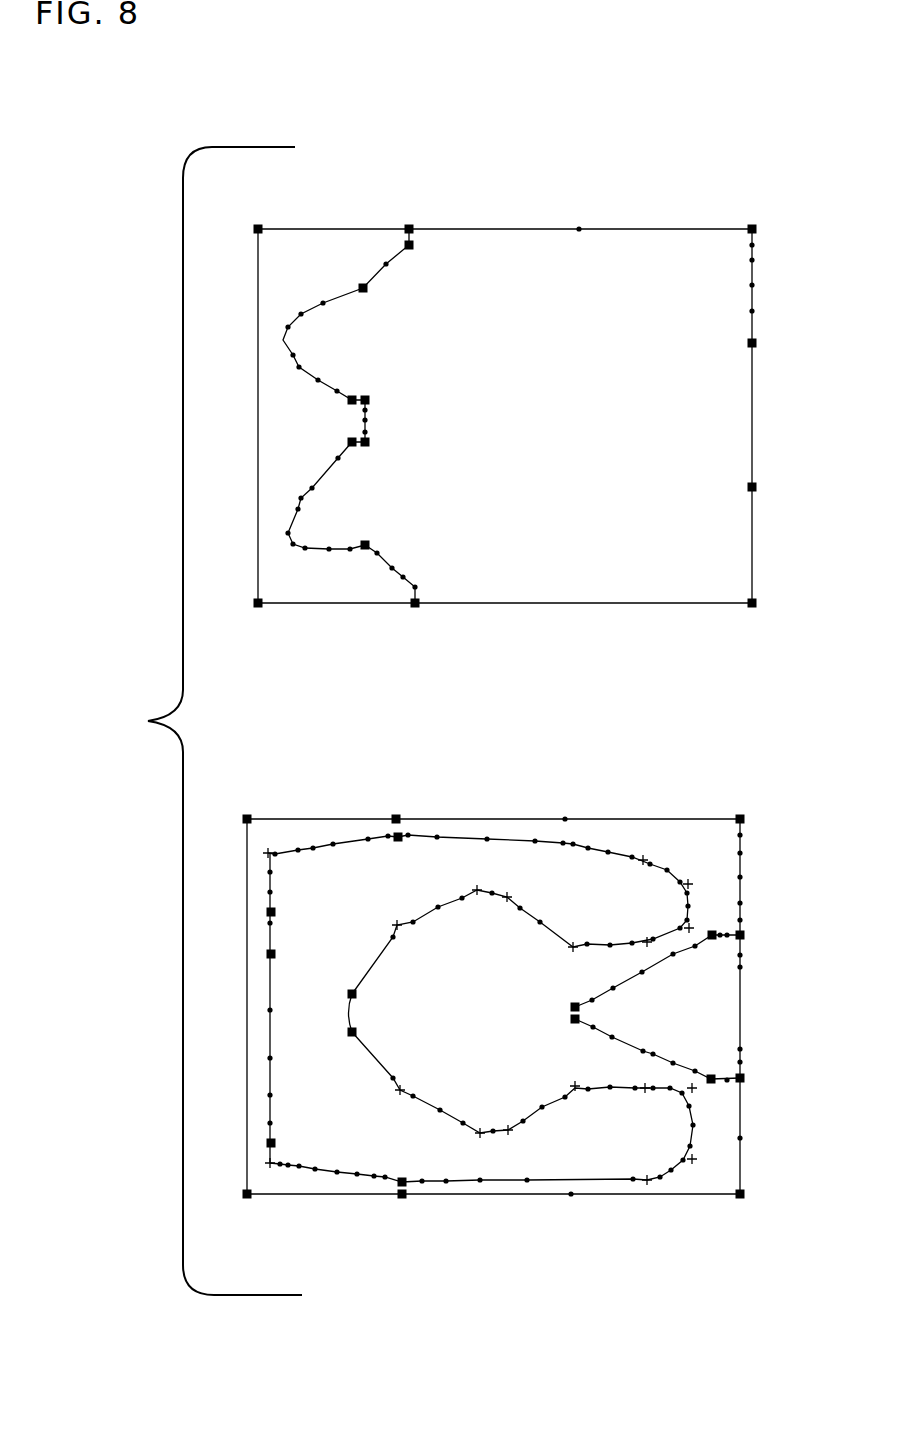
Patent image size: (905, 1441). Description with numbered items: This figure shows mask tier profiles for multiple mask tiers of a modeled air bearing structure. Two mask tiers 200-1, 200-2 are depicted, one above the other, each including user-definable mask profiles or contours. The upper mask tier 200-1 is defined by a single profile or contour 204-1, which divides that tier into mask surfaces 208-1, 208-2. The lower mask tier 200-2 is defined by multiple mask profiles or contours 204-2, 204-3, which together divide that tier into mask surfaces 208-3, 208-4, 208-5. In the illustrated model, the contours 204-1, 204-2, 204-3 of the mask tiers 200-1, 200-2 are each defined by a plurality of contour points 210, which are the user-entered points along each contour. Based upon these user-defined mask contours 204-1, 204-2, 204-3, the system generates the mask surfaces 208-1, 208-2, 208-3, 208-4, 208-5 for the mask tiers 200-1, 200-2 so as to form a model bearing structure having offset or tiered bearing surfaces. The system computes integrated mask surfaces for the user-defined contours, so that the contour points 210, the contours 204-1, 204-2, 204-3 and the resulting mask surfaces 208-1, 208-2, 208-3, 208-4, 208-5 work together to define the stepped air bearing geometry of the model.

The mask tier 200-1 is at (762, 247).
The mask tier 200-2 is at (692, 841).
The mask profile or contour 204-1 is at (293, 355).
The mask profile or contour 204-2 is at (507, 838).
The mask profile or contour 204-3 is at (714, 934).
The mask surface 208-1 is at (500, 465).
The mask surface 208-2 is at (300, 426).
The mask surface 208-3 is at (410, 898).
The mask surface 208-4 is at (710, 1029).
The mask surface 208-5 is at (502, 1018).
The contour points 210 is at (300, 508).